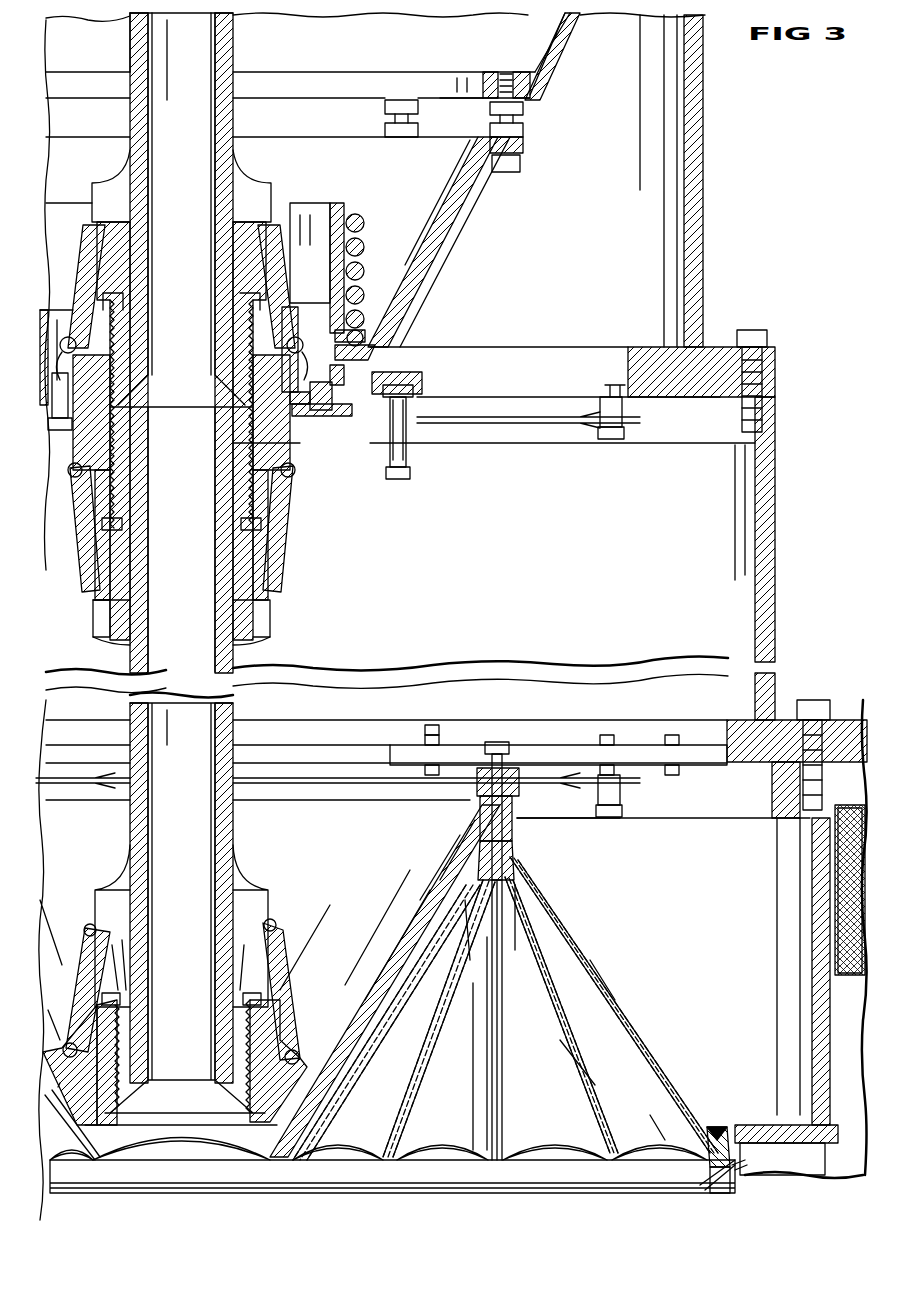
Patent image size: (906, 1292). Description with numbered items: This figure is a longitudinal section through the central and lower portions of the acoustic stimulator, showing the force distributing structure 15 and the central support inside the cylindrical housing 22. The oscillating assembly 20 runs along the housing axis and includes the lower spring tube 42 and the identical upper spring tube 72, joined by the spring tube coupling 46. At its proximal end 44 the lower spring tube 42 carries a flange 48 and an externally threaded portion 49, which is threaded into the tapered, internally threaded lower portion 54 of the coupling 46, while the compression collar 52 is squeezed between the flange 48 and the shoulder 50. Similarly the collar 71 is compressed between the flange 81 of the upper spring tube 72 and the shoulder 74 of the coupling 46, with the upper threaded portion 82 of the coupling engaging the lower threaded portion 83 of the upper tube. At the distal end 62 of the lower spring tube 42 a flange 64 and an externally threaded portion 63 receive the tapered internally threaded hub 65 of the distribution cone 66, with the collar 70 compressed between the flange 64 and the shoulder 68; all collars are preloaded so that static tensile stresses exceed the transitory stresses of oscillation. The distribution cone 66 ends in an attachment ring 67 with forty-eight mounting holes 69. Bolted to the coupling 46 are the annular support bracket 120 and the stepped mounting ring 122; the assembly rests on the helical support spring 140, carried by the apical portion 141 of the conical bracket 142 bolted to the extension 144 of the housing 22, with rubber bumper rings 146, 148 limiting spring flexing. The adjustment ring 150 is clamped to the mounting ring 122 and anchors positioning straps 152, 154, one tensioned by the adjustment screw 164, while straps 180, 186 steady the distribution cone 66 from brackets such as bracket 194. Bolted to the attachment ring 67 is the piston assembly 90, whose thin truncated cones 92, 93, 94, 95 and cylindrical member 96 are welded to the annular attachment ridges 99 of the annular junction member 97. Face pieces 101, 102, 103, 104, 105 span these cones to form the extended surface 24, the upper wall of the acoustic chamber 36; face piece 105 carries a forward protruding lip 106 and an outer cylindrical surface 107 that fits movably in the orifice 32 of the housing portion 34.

The force distributing structure 15 is at (625, 895).
The oscillating assembly 20 is at (242, 28).
The cylindrical housing 22 is at (705, 192).
The extended surface 24 is at (338, 1170).
The orifice 32 is at (725, 1195).
The housing portion 34 is at (765, 1125).
The acoustic chamber 36 is at (790, 1170).
The lower spring tube 42 is at (240, 662).
The proximal end 44 is at (212, 397).
The spring tube coupling 46 is at (300, 447).
The flange 48 is at (205, 622).
The externally threaded portion 49 is at (242, 500).
The shoulder 50 is at (256, 460).
The compression collar 52 is at (286, 536).
The tapered, internally threaded lower portion 54 is at (292, 500).
The distal end 62 is at (204, 983).
The externally threaded portion 63 is at (245, 1026).
The flange 64 is at (270, 905).
The tapered internally threaded hub 65 is at (266, 1006).
The distribution cone 66 is at (392, 958).
The attachment ring 67 is at (514, 820).
The shoulder 68 is at (282, 1038).
The mounting holes 69 is at (519, 806).
The compression collar 70 is at (290, 952).
The compression collar 71 is at (78, 268).
The upper spring tube 72 is at (128, 47).
The shoulder 74 is at (286, 358).
The flange 81 is at (273, 192).
The upper threaded portion 82 is at (268, 326).
The lower threaded portion 83 is at (232, 330).
The piston assembly 90 is at (494, 982).
The second truncated cone 92 is at (356, 1044).
The truncated cone 93 is at (420, 1054).
The truncated cone 94 is at (576, 1046).
The first truncated cone 95 is at (634, 1016).
The cylindrical member 96 is at (500, 1018).
The annular junction member 97 is at (512, 905).
The annular attachment ridges 99 is at (522, 855).
The circular face piece 101 is at (182, 1146).
The dished annular face piece 102 is at (300, 1150).
The dished annular face piece 103 is at (425, 1146).
The dished annular face piece 104 is at (582, 1146).
The face piece 105 is at (668, 1156).
The forward protruding lip 106 is at (716, 1185).
The outer cylindrical surface 107 is at (735, 1168).
The annular support bracket 120 is at (345, 203).
The stepped mounting ring 122 is at (322, 412).
The helical support spring 140 is at (366, 290).
The apical portion 141 is at (374, 358).
The conical bracket 142 is at (460, 214).
The extension 144 is at (566, 45).
The rubber bumper ring 146 is at (372, 332).
The rubber bumper ring 148 is at (348, 368).
The adjustment ring 150 is at (422, 392).
The positioning strap 152 is at (410, 415).
The positioning strap 154 is at (516, 426).
The adjustment screw 164 is at (630, 425).
The positioning strap 180 is at (385, 765).
The positioning strap 186 is at (470, 790).
The bracket 194 is at (402, 745).